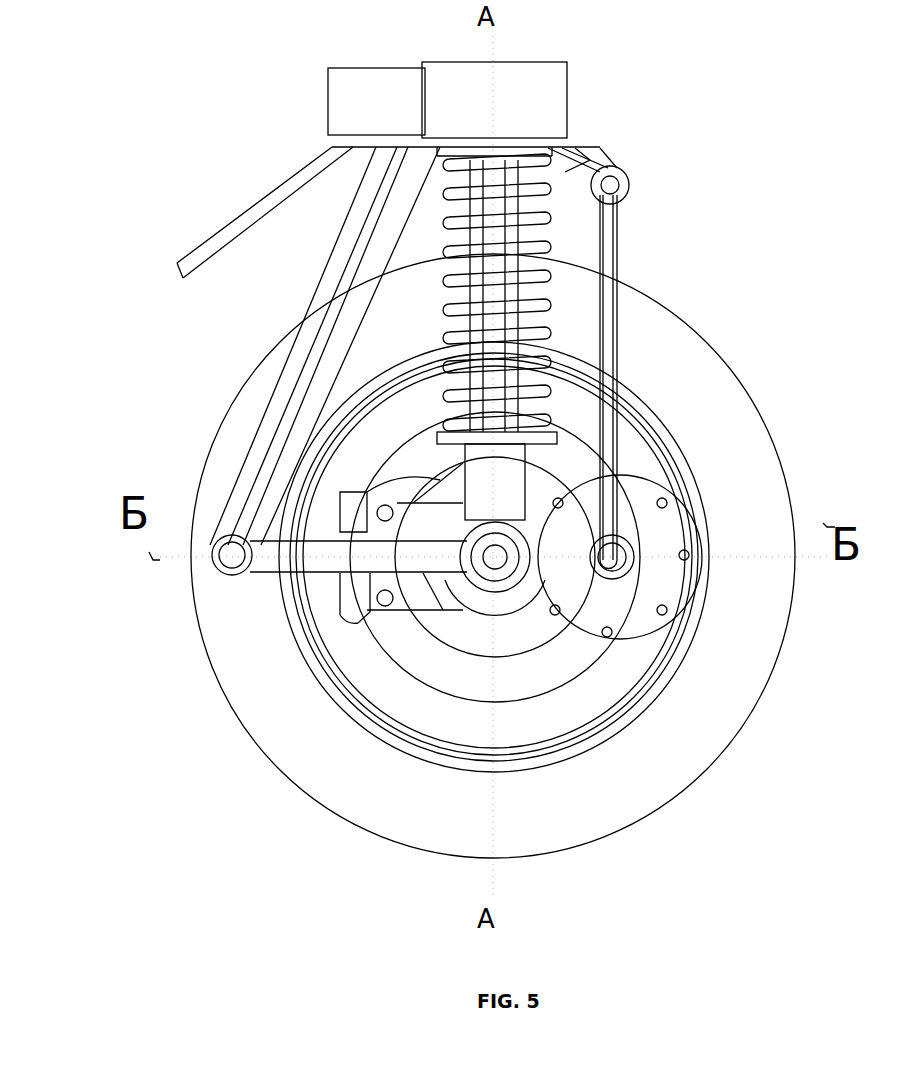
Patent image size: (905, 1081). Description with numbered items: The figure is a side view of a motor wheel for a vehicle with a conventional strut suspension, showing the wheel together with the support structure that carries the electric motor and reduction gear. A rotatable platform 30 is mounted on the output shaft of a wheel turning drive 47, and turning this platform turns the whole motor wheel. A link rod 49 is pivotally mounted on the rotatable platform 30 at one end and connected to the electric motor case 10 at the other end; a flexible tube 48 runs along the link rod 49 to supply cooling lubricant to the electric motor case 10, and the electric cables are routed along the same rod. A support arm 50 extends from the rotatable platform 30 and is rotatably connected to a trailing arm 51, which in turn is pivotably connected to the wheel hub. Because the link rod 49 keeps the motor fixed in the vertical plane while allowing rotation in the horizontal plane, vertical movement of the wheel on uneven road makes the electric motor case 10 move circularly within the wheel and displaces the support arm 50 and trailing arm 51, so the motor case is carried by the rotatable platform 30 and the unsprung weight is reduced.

The electric motor case 10 is at (632, 622).
The rotatable platform 30 is at (260, 202).
The wheel turning drive 47 is at (527, 100).
The flexible tube 48 is at (655, 515).
The link rod 49 is at (618, 369).
The support arm 50 is at (300, 378).
The trailing arm 51 is at (300, 572).